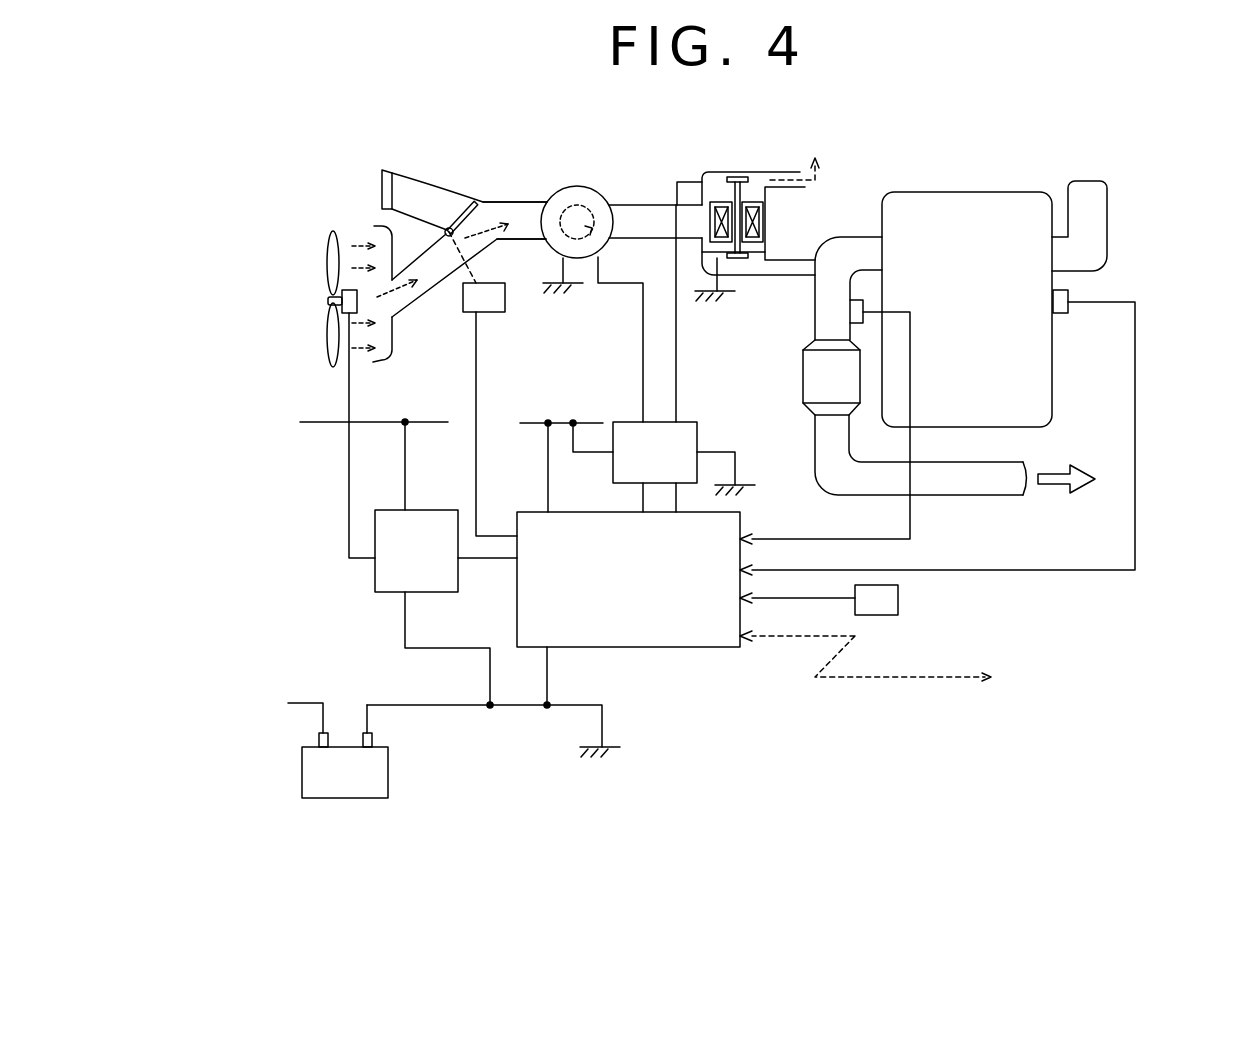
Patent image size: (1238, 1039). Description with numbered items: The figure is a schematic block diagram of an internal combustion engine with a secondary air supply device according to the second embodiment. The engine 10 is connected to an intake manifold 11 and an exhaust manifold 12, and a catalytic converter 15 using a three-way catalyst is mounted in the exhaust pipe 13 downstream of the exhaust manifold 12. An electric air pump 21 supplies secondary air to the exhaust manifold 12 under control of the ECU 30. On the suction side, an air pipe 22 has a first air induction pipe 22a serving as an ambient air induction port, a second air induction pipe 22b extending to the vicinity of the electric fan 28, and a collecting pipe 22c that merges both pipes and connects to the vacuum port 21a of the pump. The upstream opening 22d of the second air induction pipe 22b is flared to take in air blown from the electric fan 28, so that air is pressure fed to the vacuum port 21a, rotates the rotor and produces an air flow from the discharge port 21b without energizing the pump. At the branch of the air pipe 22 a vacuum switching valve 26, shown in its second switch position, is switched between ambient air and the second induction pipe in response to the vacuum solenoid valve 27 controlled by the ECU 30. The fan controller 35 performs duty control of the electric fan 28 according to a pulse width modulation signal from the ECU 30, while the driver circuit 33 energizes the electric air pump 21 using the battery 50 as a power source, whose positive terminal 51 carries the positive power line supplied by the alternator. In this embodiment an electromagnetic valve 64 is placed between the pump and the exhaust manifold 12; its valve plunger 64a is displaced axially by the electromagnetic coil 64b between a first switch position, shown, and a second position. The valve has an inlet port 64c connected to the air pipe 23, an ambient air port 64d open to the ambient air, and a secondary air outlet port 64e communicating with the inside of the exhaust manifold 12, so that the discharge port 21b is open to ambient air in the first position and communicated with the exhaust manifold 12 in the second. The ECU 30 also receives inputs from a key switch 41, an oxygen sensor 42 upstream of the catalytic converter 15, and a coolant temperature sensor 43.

The engine 10 is at (980, 192).
The intake manifold 11 is at (1110, 200).
The exhaust manifold 12 is at (863, 237).
The exhaust pipe 13 is at (813, 425).
The catalytic converter 15 is at (803, 362).
The electric air pump 21 is at (577, 187).
The vacuum port 21a is at (540, 226).
The discharge port 21b is at (614, 224).
The air pipe 22 is at (404, 178).
The first air induction pipe 22a is at (382, 177).
The second air induction pipe 22b is at (427, 303).
The collecting pipe 22c is at (532, 202).
The upstream opening 22d is at (373, 227).
The air pipe 23 is at (652, 205).
The vacuum switching valve 26 is at (452, 200).
The vacuum solenoid valve 27 is at (507, 298).
The electric fan 28 is at (327, 265).
The ECU 30 is at (630, 647).
The driver circuit 33 is at (687, 422).
The fan controller 35 is at (430, 510).
The key switch 41 is at (900, 600).
The oxygen sensor 42 is at (865, 303).
The coolant temperature sensor 43 is at (1067, 285).
The battery 50 is at (388, 778).
The positive terminal 51 is at (318, 738).
The electromagnetic valve 64 is at (728, 164).
The valve plunger 64a is at (740, 175).
The electromagnetic coil 64b is at (765, 216).
The inlet port 64c is at (703, 200).
The ambient air port 64d is at (787, 172).
The secondary air outlet port 64e is at (793, 277).